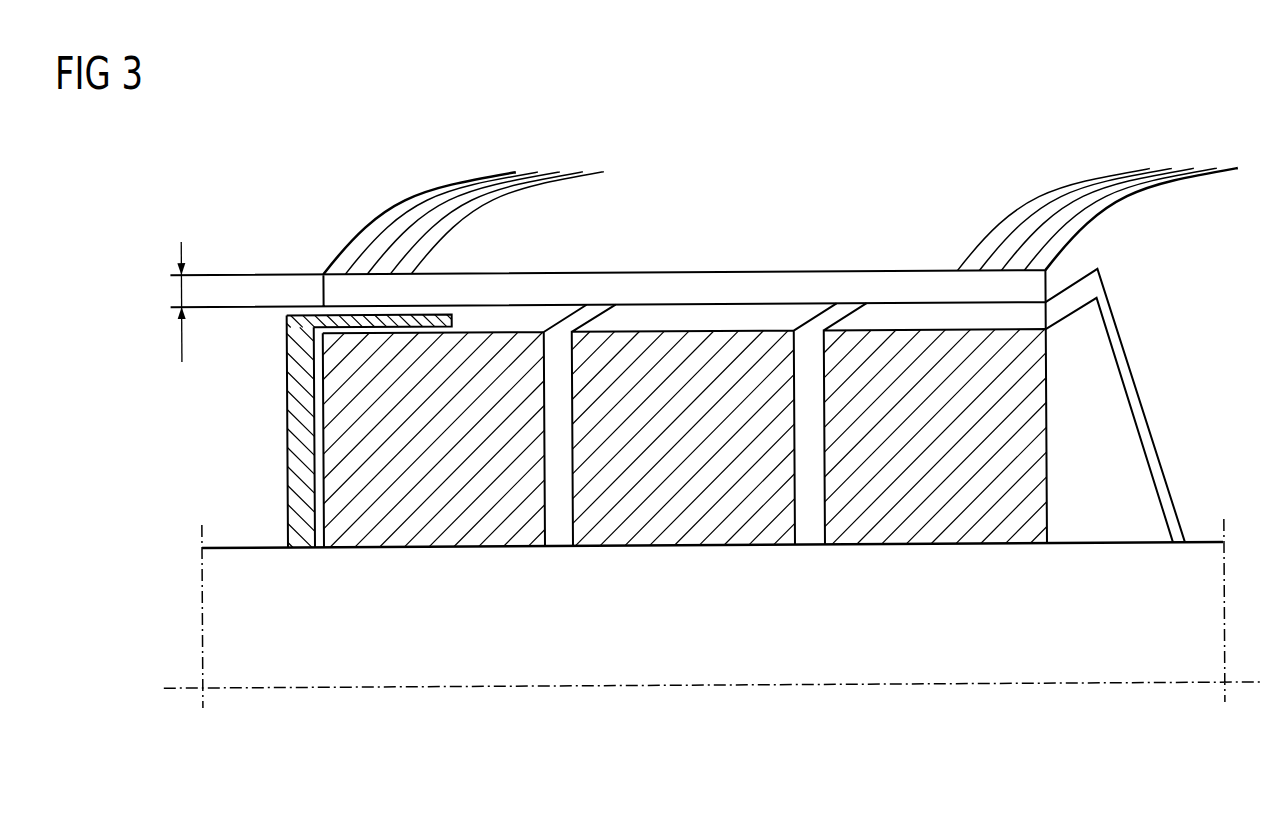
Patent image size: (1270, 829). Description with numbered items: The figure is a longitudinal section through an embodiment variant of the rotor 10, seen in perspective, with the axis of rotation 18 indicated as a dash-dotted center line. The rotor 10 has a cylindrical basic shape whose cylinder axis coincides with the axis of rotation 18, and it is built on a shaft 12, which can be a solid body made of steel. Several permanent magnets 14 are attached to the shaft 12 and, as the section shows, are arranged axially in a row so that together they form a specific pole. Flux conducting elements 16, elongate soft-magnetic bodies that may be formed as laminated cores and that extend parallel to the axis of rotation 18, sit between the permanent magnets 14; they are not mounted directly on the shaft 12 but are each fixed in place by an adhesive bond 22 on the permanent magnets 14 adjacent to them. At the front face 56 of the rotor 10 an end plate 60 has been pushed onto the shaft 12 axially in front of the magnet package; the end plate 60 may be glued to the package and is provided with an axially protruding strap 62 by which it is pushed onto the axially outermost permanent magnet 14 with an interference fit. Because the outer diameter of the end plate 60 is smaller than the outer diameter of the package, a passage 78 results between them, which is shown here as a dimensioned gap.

The rotor 10 is at (866, 137).
The shaft 12 is at (245, 566).
The permanent magnets 14 is at (433, 541).
The flux conducting elements 16 is at (1107, 253).
The axis of rotation 18 is at (630, 690).
The adhesive bond 22 is at (1145, 438).
The front face 56 is at (317, 390).
The end plate 60 is at (300, 406).
The axially protruding straps 62 is at (441, 319).
The passage 78 is at (181, 292).